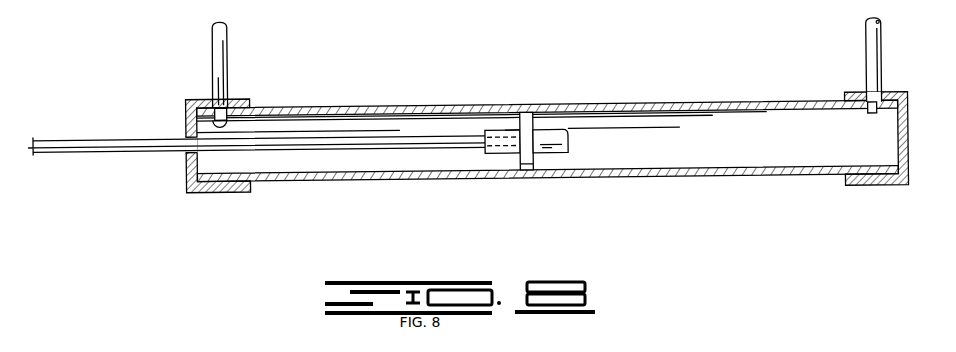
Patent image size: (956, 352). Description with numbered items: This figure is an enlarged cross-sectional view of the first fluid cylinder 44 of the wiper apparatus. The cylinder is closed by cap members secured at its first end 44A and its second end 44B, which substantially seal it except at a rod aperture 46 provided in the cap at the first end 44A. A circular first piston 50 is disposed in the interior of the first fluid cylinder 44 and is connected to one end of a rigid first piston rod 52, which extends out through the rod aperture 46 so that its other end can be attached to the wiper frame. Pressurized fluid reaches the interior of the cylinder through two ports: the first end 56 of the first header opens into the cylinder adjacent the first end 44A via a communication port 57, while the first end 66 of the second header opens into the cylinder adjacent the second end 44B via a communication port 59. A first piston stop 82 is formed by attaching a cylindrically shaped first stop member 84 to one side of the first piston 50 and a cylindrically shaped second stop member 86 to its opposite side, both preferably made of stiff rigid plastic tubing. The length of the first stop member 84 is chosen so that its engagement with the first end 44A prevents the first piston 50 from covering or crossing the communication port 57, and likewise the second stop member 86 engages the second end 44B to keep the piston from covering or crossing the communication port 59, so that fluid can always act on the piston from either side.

The first fluid cylinder 44 is at (351, 98).
The first end 44A is at (214, 193).
The second end 44B is at (872, 186).
The rod aperture 46 is at (184, 138).
The first piston rod 52 is at (105, 139).
The first end of the first header 56 is at (221, 46).
The communication port 57 is at (246, 113).
The first end of the second header 66 is at (869, 41).
The communication port 59 is at (872, 112).
The first stop member 84 is at (492, 130).
The first piston stop 82 is at (504, 112).
The first piston 50 is at (526, 112).
The second stop member 86 is at (548, 130).